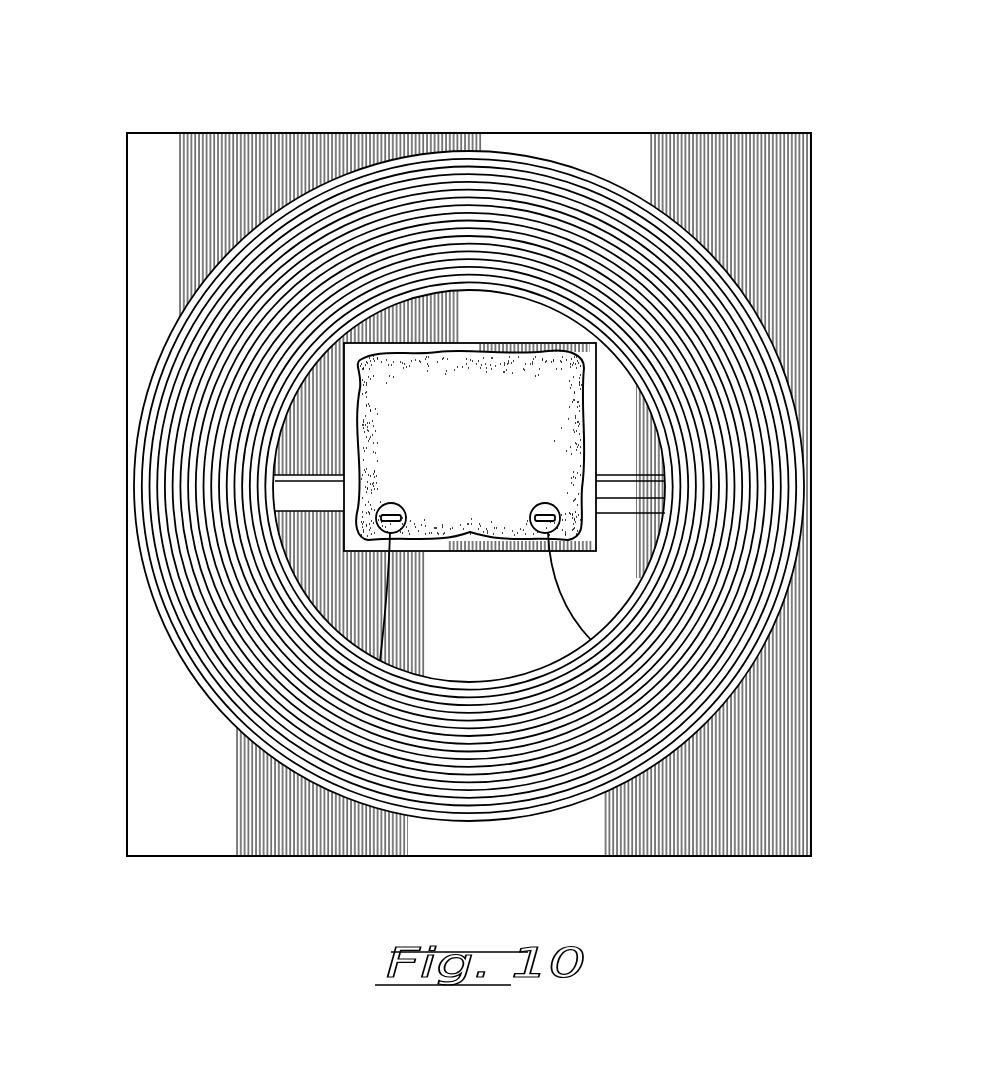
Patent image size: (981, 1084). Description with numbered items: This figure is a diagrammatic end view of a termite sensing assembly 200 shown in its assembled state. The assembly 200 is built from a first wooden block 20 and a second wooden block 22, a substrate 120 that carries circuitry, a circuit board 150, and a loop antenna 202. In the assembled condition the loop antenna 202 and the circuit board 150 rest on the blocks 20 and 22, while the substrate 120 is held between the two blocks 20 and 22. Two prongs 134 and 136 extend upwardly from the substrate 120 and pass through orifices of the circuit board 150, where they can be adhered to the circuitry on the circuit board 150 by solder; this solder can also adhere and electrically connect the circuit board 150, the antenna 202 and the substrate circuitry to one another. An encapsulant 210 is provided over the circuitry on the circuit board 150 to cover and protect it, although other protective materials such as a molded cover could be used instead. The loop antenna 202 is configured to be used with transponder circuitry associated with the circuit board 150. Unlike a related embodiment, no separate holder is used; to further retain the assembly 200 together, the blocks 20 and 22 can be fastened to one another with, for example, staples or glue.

The termite sensing assembly 200 is at (672, 65).
The first wooden block 20 is at (275, 145).
The second wooden block 22 is at (190, 818).
The loop antenna 202 is at (170, 308).
The circuit board 150 is at (540, 335).
The encapsulant 210 is at (487, 464).
The prong 134 is at (388, 505).
The prong 136 is at (505, 543).
The substrate 120 is at (607, 493).